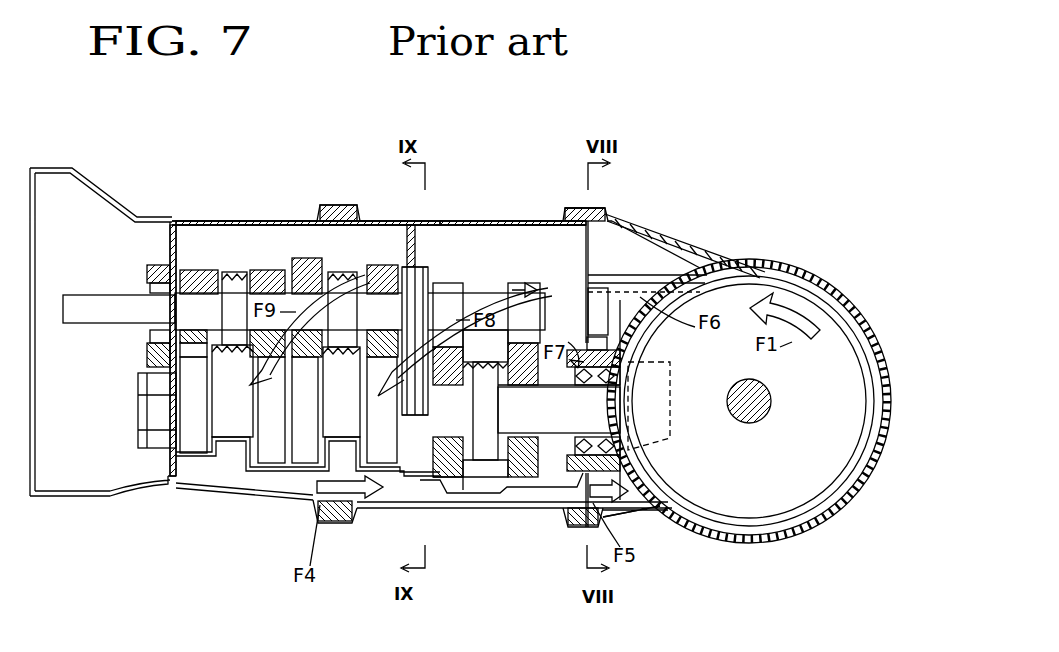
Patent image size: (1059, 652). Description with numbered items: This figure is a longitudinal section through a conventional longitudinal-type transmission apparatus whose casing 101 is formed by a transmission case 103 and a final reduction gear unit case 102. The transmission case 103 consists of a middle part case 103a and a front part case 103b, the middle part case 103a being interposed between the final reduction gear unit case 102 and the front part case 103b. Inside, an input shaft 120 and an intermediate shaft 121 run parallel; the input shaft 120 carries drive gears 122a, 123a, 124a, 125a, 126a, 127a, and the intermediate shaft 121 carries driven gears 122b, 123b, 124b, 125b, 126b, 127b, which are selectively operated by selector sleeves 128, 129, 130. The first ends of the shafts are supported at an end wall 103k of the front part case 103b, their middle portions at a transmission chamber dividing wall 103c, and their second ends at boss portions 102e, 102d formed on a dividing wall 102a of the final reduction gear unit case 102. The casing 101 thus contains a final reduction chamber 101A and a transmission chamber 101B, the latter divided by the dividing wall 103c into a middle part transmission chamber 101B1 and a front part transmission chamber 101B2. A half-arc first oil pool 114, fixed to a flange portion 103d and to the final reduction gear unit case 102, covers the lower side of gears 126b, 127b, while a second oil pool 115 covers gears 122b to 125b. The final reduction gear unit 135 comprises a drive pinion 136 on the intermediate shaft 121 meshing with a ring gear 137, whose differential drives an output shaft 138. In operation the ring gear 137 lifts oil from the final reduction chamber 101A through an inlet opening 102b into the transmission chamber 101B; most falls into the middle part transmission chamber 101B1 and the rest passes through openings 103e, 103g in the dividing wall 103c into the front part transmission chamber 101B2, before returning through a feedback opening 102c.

The casing 101 is at (383, 205).
The final reduction chamber 101A is at (847, 318).
The transmission chamber 101B is at (517, 233).
The middle part transmission chamber 101B1 is at (617, 237).
The front part transmission chamber 101B2 is at (248, 230).
The final reduction gear unit case 102 is at (793, 273).
The dividing wall 102a is at (620, 452).
The inlet opening 102b is at (683, 262).
The feedback opening 102c is at (660, 500).
The boss portion 102d is at (627, 510).
The boss portion 102e is at (615, 276).
The transmission case 103 is at (402, 310).
The middle part case 103a is at (465, 221).
The front part case 103b is at (278, 221).
The transmission chamber dividing wall 103c is at (420, 258).
The flange portion 103d is at (418, 508).
The opening 103e is at (432, 258).
The opening 103g is at (444, 406).
The end wall 103k is at (170, 248).
The first oil pool 114 is at (548, 508).
The second oil pool 115 is at (235, 470).
The input shaft 120 is at (185, 312).
The intermediate shaft 121 is at (195, 460).
The drive gear 122a is at (210, 270).
The driven gear 122b is at (185, 490).
The drive gear 123a is at (268, 270).
The driven gear 123b is at (272, 470).
The drive gear 124a is at (315, 247).
The driven gear 124b is at (300, 470).
The drive gear 125a is at (382, 265).
The driven gear 125b is at (380, 470).
The drive gear 126a is at (450, 292).
The driven gear 126b is at (447, 508).
The drive gear 127a is at (530, 290).
The driven gear 127b is at (525, 495).
The selector sleeve 128 is at (231, 272).
The selector sleeve 129 is at (343, 272).
The selector sleeve 130 is at (487, 478).
The final reduction gear unit 135 is at (851, 504).
The drive pinion 136 is at (643, 363).
The ring gear 137 is at (797, 495).
The output shaft 138 is at (772, 398).